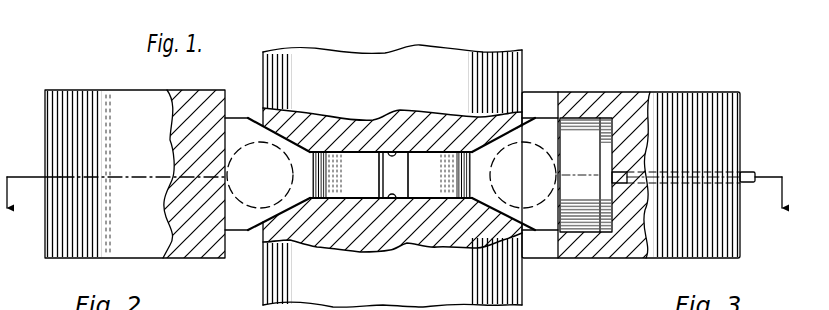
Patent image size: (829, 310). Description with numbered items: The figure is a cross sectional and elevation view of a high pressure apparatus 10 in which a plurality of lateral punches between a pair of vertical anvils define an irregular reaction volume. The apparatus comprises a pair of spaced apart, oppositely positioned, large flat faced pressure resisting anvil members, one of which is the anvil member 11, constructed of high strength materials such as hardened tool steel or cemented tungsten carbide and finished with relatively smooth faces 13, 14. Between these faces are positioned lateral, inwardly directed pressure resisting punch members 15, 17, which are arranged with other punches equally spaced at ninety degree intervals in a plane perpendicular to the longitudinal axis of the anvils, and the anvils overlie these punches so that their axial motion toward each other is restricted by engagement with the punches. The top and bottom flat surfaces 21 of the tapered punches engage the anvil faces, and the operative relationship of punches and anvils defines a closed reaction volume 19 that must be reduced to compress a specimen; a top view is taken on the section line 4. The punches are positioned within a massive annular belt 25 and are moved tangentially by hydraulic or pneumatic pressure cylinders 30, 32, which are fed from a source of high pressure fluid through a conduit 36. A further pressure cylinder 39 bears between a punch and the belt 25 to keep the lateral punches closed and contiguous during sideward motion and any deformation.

The section line 4— 4 is at (394, 180).
The high pressure apparatus 10 is at (560, 71).
The anvil member 11 is at (355, 62).
The face 13 is at (400, 152).
The face 14 is at (396, 197).
The punch member 15 is at (327, 192).
The punch member 17 is at (457, 196).
The reaction volume 19 is at (406, 188).
The flat surfaces 21 is at (345, 152).
The belt 25 is at (725, 98).
The pressure cylinder 30 is at (249, 206).
The pressure cylinder 32 is at (550, 208).
The conduit 36 is at (748, 171).
The pressure cylinder 39 is at (578, 130).